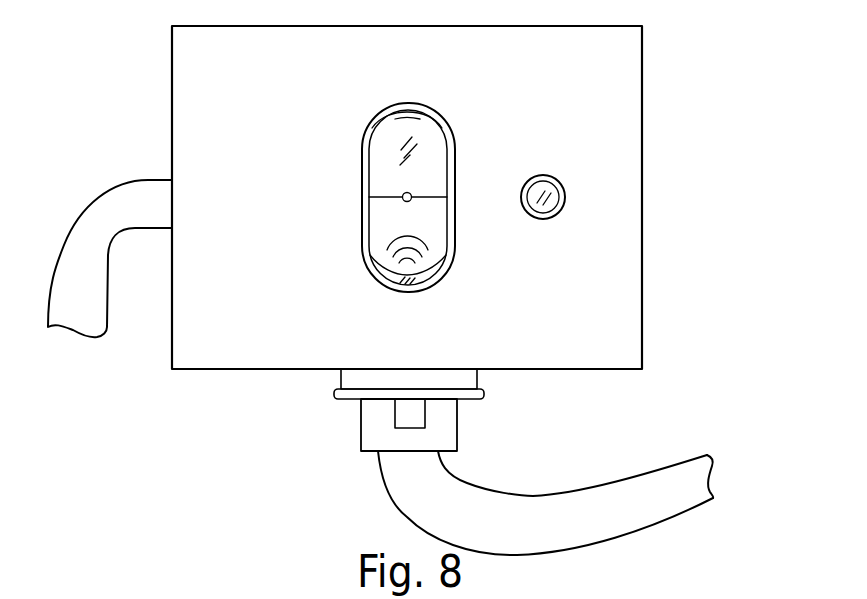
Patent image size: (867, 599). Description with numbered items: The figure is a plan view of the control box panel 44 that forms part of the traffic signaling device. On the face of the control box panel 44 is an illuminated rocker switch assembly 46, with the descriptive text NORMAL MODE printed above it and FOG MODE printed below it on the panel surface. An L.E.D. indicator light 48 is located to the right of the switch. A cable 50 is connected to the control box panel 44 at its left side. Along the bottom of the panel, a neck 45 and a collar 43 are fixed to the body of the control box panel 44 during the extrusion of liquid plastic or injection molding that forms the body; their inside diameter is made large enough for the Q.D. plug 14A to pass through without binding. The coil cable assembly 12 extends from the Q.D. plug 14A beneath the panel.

The coil cable assembly 12 is at (377, 490).
The Q.D. plug 14A is at (450, 424).
The collar 43 is at (346, 397).
The control box panel 44 is at (620, 73).
The neck 45 is at (352, 380).
The illuminated rocker switch assembly 46 is at (432, 216).
The L.E.D. indicator light 48 is at (565, 197).
The cable 50 is at (116, 205).